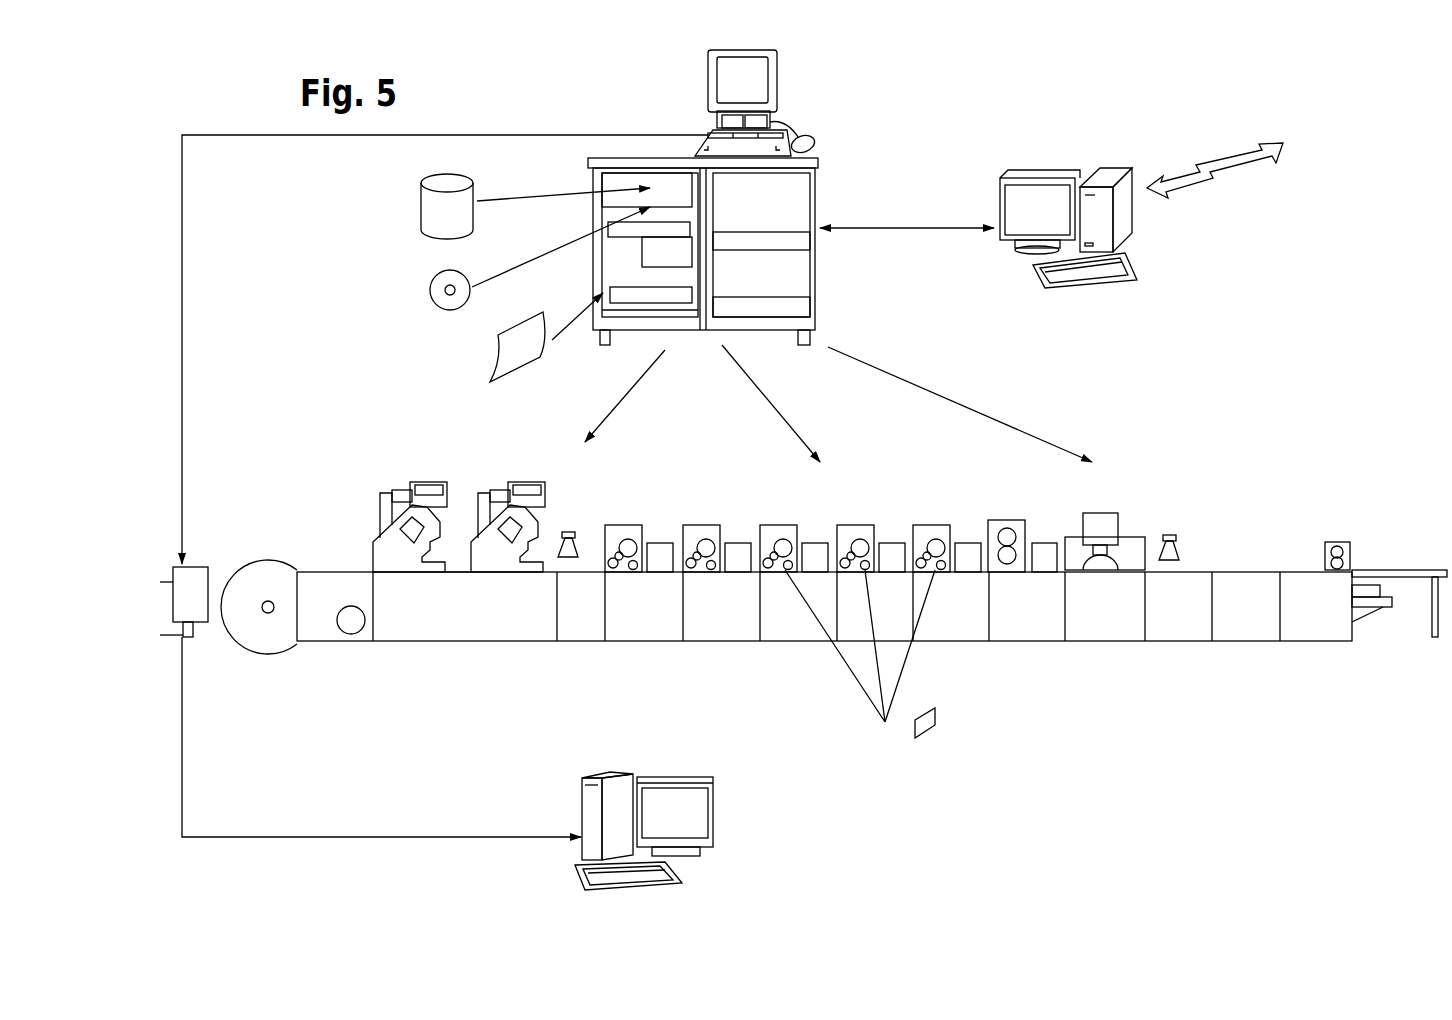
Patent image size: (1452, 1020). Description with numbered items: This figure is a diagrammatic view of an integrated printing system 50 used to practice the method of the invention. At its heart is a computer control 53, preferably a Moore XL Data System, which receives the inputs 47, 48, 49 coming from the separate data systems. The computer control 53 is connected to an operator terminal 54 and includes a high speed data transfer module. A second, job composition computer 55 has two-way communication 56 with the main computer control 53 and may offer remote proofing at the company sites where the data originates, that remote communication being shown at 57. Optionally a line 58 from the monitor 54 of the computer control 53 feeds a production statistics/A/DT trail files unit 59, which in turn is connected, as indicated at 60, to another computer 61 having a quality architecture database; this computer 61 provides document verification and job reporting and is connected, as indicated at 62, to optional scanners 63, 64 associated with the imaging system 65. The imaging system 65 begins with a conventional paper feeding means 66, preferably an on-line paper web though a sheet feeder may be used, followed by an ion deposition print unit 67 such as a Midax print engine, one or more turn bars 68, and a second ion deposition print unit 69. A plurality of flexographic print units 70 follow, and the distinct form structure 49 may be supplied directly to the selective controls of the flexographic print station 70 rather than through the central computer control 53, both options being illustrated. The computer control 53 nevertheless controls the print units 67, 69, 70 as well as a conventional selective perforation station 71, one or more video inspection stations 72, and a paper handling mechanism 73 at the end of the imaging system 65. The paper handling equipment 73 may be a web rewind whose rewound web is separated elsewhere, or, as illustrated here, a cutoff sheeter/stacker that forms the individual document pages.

The input 47 is at (450, 205).
The input 48 is at (430, 290).
The distinct form structure input 49 is at (517, 355).
The integrated printing system 50 is at (1018, 113).
The computer control 53 is at (828, 143).
The operator terminal 54 is at (730, 77).
The job composition computer 55 is at (1145, 257).
The two-way communication 56 is at (870, 228).
The remote communication 57 is at (1228, 168).
The line 58 is at (232, 135).
The production statistics/A/DT trail files unit 59 is at (203, 630).
The connection 60 is at (400, 835).
The computer 61 is at (733, 845).
The connection 62 is at (580, 798).
The scanner 63 is at (579, 524).
The scanner 64 is at (1197, 517).
The imaging system 65 is at (815, 534).
The paper feeding means 66 is at (245, 542).
The ion deposition print unit 67 is at (375, 517).
The turn bar 68 is at (458, 568).
The second ion deposition print unit 69 is at (531, 478).
The flexographic print units 70 is at (860, 661).
The selective perforation station 71 is at (1003, 527).
The video inspection station 72 is at (1121, 517).
The paper handling mechanism 73 is at (1367, 555).